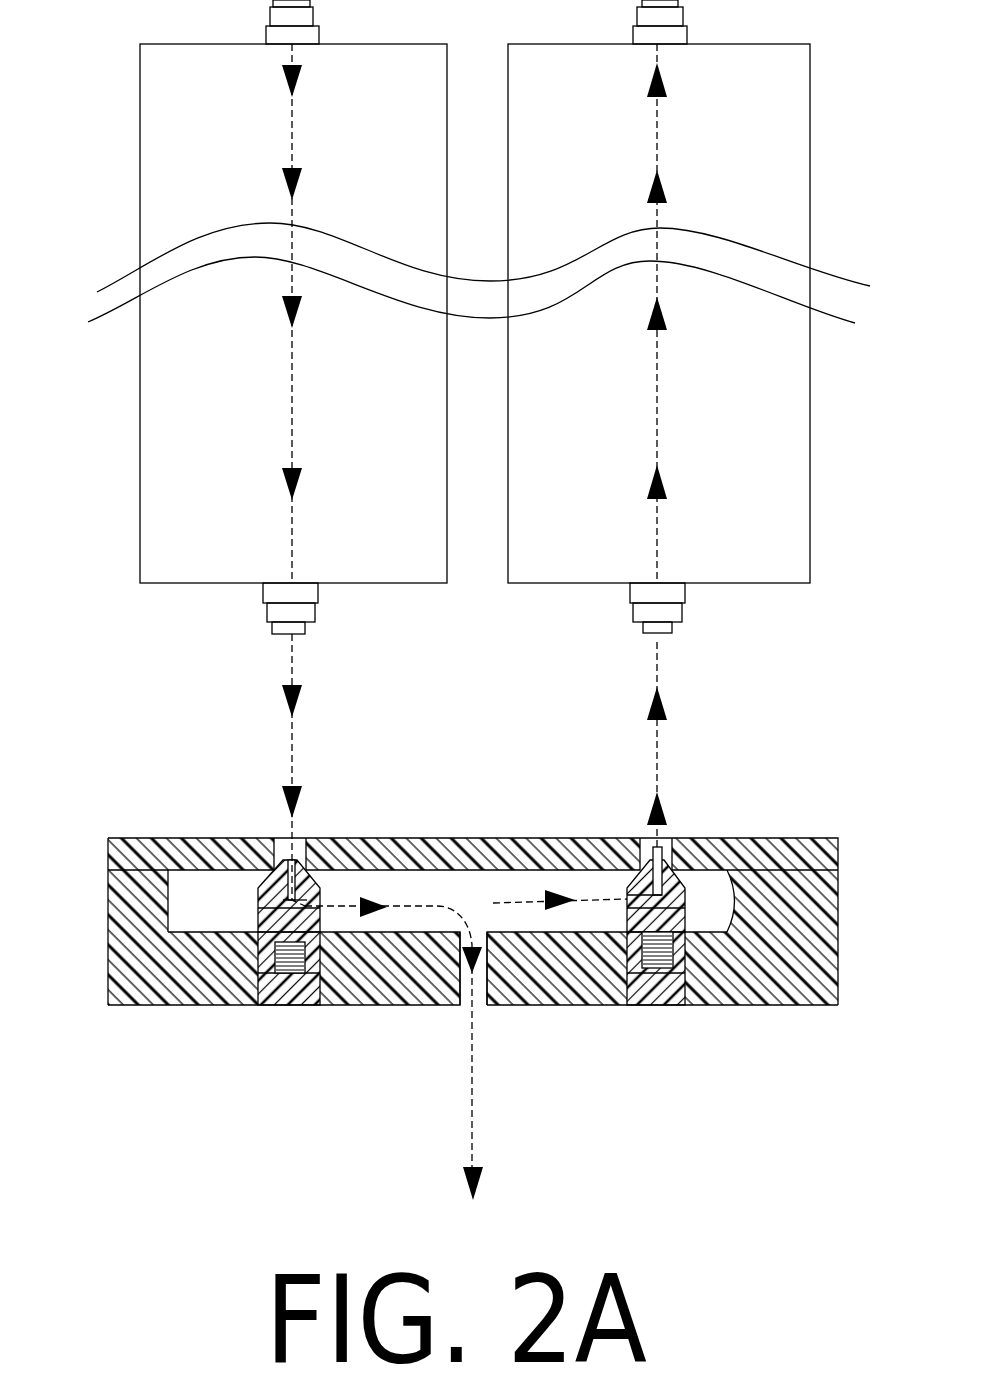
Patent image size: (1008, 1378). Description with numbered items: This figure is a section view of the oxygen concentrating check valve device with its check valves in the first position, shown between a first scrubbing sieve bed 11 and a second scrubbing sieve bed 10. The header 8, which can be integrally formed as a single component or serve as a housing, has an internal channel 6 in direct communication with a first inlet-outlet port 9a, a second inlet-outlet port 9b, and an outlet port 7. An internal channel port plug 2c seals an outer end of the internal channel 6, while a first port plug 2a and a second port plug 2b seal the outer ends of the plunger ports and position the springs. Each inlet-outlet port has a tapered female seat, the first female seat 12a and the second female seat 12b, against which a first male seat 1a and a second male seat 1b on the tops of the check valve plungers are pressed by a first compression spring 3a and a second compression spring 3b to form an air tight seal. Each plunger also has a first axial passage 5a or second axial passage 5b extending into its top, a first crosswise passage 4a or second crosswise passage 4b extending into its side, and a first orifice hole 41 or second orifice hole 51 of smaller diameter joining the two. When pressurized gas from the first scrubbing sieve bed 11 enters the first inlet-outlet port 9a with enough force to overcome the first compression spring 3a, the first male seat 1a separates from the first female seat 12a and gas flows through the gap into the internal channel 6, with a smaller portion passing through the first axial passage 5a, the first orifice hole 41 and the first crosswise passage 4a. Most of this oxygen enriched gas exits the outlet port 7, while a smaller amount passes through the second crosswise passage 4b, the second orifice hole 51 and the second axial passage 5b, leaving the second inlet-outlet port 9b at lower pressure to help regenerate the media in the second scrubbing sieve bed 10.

The first male seat 1a is at (220, 838).
The second male seat 1b is at (720, 838).
The first port plug 2a is at (282, 1005).
The second port plug 2b is at (653, 1005).
The internal channel port plug 2c is at (108, 903).
The first compression spring 3a is at (265, 1009).
The second compression spring 3b is at (688, 1002).
The first crosswise passage 4a is at (275, 958).
The second crosswise passage 4b is at (640, 972).
The first axial passage 5a is at (299, 825).
The second axial passage 5b is at (723, 826).
The internal channel 6 is at (423, 892).
The outlet port 7 is at (465, 975).
The header 8 is at (838, 925).
The first inlet-outlet port 9a is at (279, 838).
The second inlet-outlet port 9b is at (668, 838).
The second scrubbing sieve bed 10 is at (810, 447).
The first scrubbing sieve bed 11 is at (140, 180).
The first female seat 12a is at (262, 838).
The second female seat 12b is at (688, 838).
The first orifice hole 41 is at (258, 898).
The second orifice hole 51 is at (630, 895).